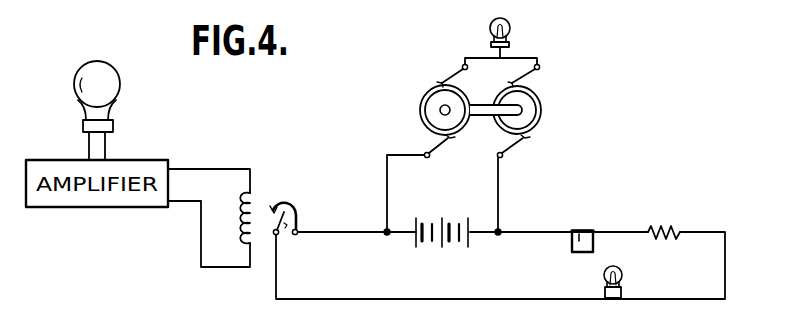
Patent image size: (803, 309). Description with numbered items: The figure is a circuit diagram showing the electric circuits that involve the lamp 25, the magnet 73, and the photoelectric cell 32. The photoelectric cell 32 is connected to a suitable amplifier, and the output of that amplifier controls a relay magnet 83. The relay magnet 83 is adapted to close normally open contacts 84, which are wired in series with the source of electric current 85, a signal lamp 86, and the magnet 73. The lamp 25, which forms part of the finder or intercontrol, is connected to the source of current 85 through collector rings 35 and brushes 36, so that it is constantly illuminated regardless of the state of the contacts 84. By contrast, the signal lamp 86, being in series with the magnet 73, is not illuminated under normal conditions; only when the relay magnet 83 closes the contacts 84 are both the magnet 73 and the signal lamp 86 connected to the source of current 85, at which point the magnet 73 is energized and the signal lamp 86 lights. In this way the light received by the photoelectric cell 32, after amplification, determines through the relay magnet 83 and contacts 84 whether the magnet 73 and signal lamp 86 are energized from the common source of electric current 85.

The lamp 25 is at (508, 21).
The photoelectric cell 32 is at (108, 89).
The collector rings 35 is at (433, 93).
The brushes 36 is at (493, 145).
The magnet 73 is at (585, 229).
The relay magnet 83 is at (240, 213).
The contacts 84 is at (285, 211).
The source of electric current 85 is at (440, 248).
The signal lamp 86 is at (622, 271).